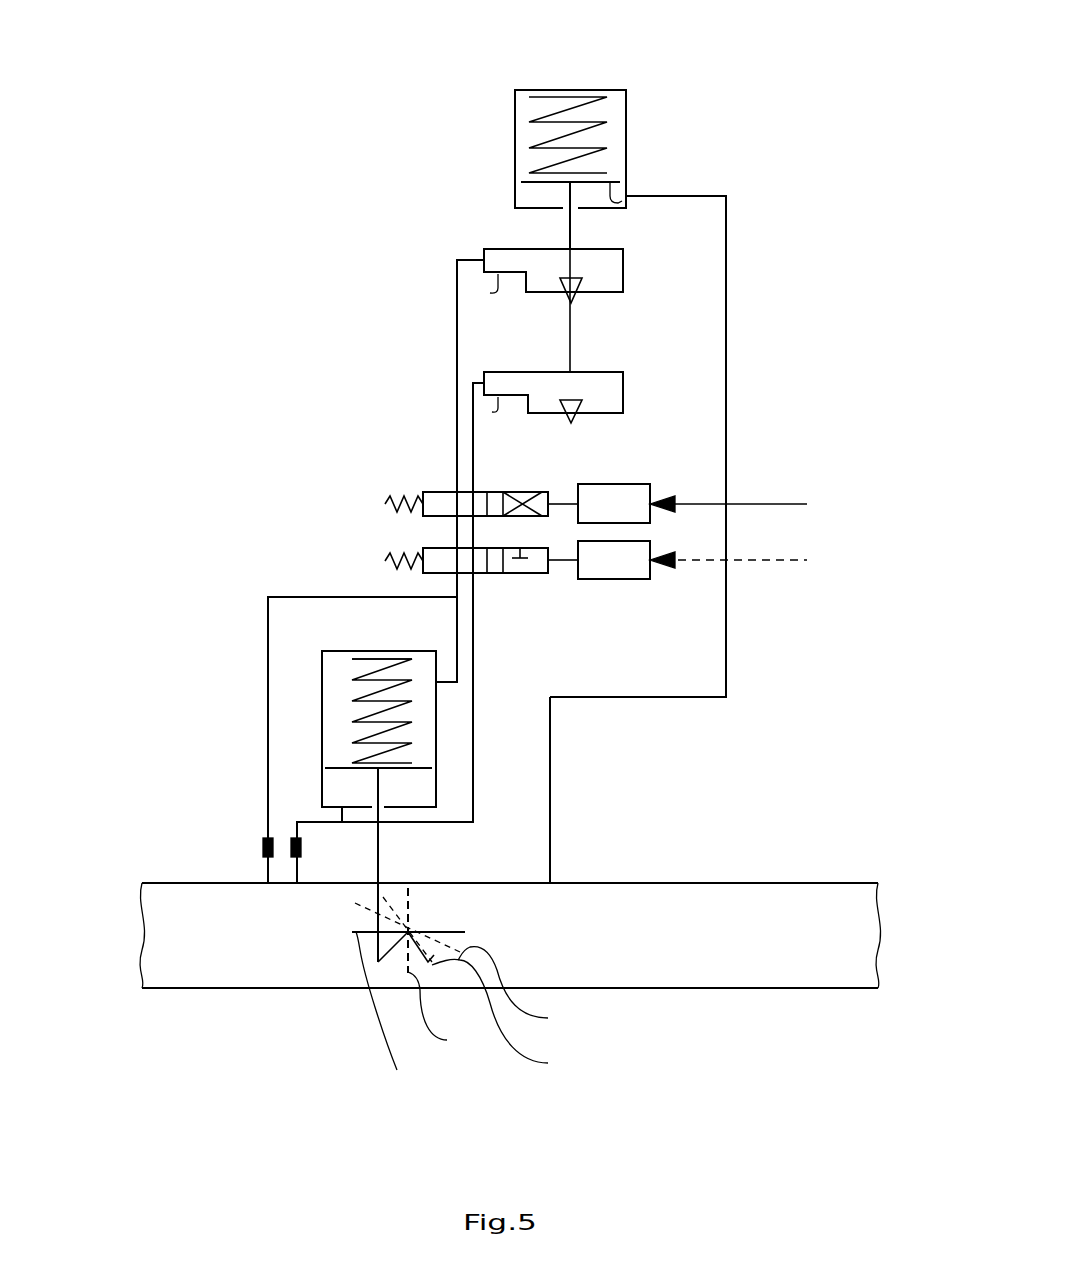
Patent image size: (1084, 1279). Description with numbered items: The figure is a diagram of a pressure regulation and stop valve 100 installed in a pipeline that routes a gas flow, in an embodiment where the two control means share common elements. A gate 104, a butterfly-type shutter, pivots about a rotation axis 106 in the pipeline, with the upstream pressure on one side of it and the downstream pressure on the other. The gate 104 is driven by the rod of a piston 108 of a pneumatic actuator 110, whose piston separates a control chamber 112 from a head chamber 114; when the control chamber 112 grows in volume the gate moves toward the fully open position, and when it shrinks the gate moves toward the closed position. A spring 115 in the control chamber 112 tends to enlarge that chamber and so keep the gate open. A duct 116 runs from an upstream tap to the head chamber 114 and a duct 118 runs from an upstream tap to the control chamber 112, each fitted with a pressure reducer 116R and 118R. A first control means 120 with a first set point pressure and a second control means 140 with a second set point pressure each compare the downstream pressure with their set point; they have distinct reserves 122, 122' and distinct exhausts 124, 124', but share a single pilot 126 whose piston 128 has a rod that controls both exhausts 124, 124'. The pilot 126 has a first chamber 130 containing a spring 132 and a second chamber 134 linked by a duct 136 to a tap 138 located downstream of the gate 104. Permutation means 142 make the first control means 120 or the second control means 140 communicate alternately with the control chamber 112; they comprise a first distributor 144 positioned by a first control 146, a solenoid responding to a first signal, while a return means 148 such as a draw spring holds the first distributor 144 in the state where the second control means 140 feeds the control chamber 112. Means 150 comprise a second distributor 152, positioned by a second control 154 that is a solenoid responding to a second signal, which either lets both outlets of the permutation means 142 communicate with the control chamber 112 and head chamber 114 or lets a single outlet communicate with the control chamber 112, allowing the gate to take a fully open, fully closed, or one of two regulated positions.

The pressure regulation and stop valve 100 is at (827, 97).
The gate 104 is at (464, 984).
The rotation axis 106 is at (405, 934).
The piston 108 is at (330, 746).
The actuator 110 is at (289, 741).
The control chamber 112 is at (330, 660).
The head chamber 114 is at (325, 791).
The spring 115 is at (362, 657).
The duct 116 is at (342, 812).
The pressure reducer 116R is at (302, 848).
The duct 118 is at (265, 876).
The pressure reducer 118R is at (270, 850).
The first control means 120 is at (520, 420).
The reserve 122 is at (424, 471).
The reserve 122' is at (397, 629).
The exhaust 124 is at (625, 310).
The exhaust 124' is at (613, 432).
The pilot 126 is at (586, 124).
The piston 128 is at (626, 202).
The first chamber 130 is at (515, 112).
The spring 132 is at (572, 97).
The second chamber 134 is at (515, 196).
The duct 136 is at (726, 245).
The tap 138 is at (550, 882).
The second control means 140 is at (565, 594).
The permutation means 142 is at (555, 458).
The first distributor 144 is at (443, 490).
The first control 146 is at (650, 486).
The return means 148 is at (385, 500).
The means 150 is at (611, 609).
The second distributor 152 is at (478, 575).
The second control 154 is at (662, 586).